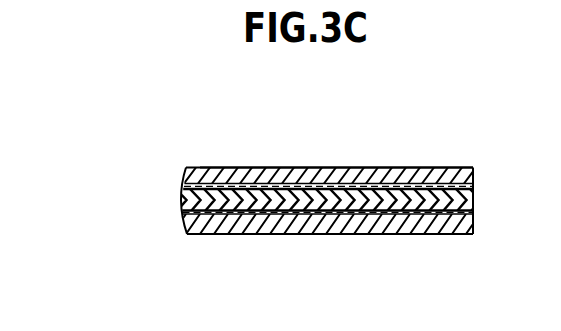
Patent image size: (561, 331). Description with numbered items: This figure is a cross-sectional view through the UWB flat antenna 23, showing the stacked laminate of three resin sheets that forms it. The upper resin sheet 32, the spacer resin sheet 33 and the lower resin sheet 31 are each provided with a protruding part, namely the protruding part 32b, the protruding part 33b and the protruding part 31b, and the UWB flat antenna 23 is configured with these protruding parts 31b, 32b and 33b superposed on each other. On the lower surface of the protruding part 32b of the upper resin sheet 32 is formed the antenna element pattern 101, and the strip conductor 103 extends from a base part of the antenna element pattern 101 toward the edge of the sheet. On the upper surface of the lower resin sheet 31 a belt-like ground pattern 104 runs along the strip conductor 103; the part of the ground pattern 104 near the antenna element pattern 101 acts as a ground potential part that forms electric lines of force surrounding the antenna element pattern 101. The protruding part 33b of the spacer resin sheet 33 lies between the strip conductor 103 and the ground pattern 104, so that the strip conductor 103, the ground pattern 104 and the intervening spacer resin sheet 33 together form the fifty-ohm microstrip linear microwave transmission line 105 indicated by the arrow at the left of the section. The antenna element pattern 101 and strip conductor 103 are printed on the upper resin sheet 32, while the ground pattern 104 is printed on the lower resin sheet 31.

The UWB flat antenna 23 is at (214, 90).
The strip conductor 103 is at (236, 171).
The upper resin sheet 32 is at (338, 172).
The antenna element pattern 101 is at (406, 175).
The protruding part of upper resin sheet 32b is at (462, 186).
The spacer resin sheet 33 is at (340, 200).
The protruding part of spacer resin sheet 33b is at (462, 212).
The ground pattern 104 is at (280, 218).
The lower resin sheet 31 is at (215, 223).
The protruding part of lower resin sheet 31b is at (457, 224).
The microwave transmission line 105 is at (166, 208).